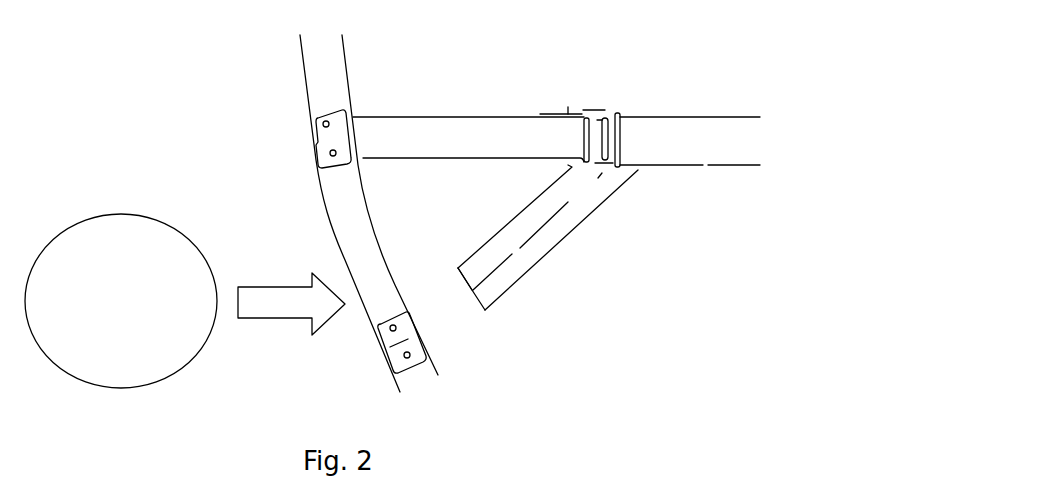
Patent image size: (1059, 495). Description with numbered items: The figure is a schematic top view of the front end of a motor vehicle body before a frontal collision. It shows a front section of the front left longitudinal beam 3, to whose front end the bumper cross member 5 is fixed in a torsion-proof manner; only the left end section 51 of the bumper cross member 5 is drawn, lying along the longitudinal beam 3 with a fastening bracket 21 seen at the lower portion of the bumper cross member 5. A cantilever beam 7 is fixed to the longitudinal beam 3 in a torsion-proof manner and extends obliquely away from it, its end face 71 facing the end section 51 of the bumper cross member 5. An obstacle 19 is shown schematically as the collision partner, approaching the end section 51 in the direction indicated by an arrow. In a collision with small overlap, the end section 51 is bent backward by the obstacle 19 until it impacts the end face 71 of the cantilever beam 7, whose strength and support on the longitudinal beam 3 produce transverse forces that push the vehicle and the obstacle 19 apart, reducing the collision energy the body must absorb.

The longitudinal beam 3 is at (450, 135).
The bumper cross member 5 is at (301, 62).
The end section 51 is at (353, 212).
The cantilever beam 7 is at (548, 230).
The end face 71 is at (473, 292).
The obstacle 19 is at (98, 243).
The lower fastening bracket 21 is at (403, 345).